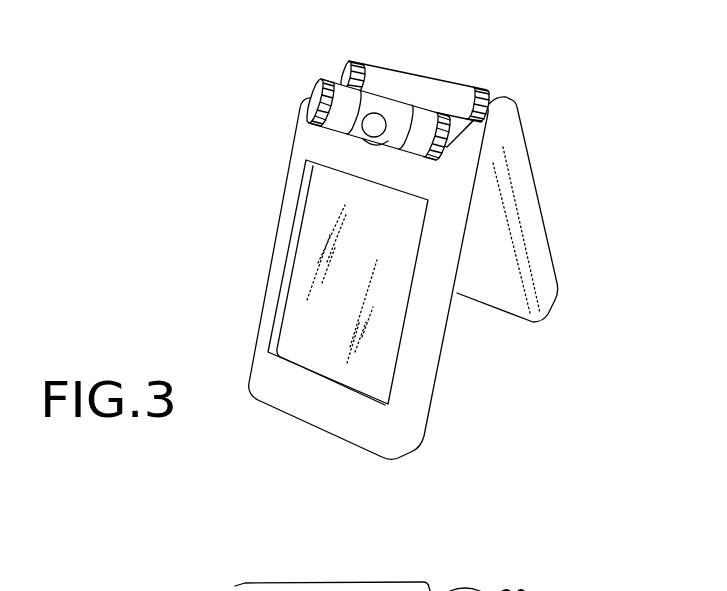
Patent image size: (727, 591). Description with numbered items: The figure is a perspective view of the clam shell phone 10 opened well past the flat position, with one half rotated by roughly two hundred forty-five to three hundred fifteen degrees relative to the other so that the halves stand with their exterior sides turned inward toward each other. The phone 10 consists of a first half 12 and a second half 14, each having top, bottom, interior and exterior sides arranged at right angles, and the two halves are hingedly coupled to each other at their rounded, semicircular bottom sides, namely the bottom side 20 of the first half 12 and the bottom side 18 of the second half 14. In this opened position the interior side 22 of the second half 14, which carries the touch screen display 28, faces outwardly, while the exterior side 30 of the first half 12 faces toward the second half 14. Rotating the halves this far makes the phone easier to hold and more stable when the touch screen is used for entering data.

The phone 10 is at (192, 116).
The first half 12 is at (562, 213).
The second half 14 is at (452, 405).
The bottom side of the second half 18 is at (380, 93).
The bottom side of the first half 20 is at (378, 85).
The interior side of the second half 22 is at (298, 395).
The display 28 is at (302, 318).
The exterior side of the first half 30 is at (481, 262).